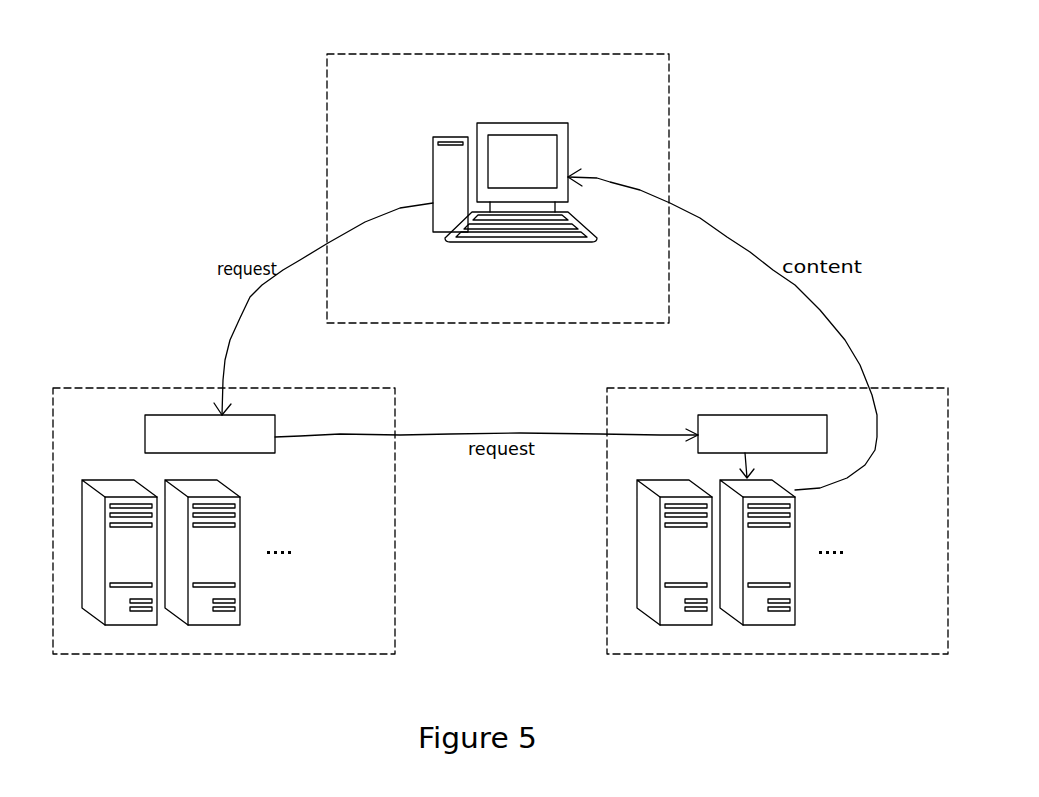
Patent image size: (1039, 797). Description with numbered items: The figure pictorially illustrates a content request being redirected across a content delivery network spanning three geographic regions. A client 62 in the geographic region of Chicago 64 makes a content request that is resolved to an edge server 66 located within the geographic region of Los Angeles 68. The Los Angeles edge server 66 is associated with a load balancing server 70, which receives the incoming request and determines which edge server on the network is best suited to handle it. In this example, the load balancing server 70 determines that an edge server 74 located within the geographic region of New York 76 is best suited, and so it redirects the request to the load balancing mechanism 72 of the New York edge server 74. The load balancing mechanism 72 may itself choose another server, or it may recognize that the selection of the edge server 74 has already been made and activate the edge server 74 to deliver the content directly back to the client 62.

The client 62 is at (555, 122).
The geographic region of Chicago 64 is at (661, 54).
The edge server 66 is at (125, 480).
The geographic region of Los Angeles 68 is at (397, 391).
The load balancing server 70 is at (270, 416).
The load balancing mechanism 72 is at (822, 415).
The edge server 74 is at (755, 625).
The geographic region of New York 76 is at (949, 395).